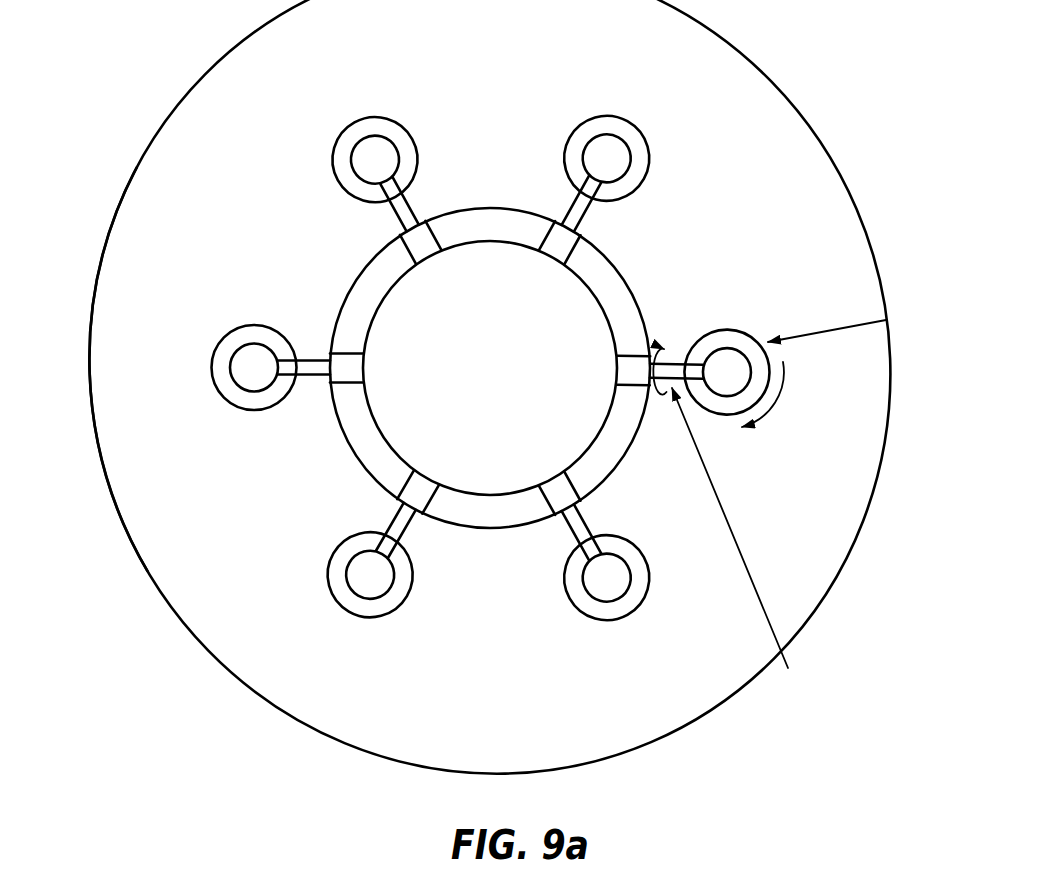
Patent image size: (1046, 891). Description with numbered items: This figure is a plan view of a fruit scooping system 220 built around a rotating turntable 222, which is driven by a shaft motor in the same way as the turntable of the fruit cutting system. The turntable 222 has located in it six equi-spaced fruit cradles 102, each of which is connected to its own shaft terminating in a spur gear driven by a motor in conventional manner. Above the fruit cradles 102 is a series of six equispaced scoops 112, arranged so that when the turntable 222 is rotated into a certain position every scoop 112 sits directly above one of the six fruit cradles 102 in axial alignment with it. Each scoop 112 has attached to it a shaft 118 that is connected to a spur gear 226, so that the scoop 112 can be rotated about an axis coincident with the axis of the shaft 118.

The fruit scooping system 220 is at (195, 80).
The rotating turntable 222 is at (110, 310).
The fruit cradle 102 is at (238, 328).
The scoop 112 is at (247, 387).
The shaft 118 is at (675, 360).
The spur gear 226 is at (352, 366).